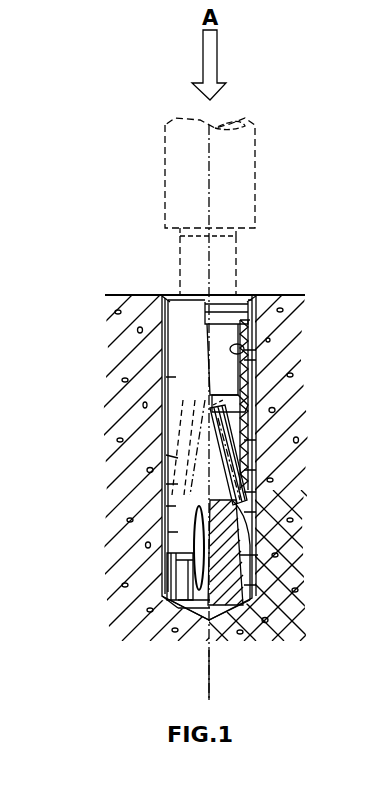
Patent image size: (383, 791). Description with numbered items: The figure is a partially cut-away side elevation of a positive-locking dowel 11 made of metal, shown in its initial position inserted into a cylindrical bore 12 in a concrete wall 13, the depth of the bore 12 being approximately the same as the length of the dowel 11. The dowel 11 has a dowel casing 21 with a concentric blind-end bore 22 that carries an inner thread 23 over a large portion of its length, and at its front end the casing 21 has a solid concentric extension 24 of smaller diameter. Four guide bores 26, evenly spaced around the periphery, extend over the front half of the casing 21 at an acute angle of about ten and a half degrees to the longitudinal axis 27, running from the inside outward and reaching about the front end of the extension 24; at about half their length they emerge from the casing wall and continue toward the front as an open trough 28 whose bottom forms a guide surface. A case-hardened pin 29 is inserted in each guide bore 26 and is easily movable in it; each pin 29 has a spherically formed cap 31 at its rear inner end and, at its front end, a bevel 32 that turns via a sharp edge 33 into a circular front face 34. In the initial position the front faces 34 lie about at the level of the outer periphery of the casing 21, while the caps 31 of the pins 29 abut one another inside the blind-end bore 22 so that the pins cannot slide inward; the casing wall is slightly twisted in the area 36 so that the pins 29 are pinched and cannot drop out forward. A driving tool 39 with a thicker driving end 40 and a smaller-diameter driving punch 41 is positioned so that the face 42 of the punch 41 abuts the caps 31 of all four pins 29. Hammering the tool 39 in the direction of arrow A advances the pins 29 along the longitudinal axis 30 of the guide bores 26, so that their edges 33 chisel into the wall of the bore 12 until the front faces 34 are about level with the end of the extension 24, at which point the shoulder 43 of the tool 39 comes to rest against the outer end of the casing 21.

The positive-locking dowel 11 is at (272, 438).
The cylindrical bore 12 is at (163, 416).
The concrete wall 13 is at (168, 560).
The dowel casing 21 is at (258, 352).
The blind-end bore 22 is at (258, 328).
The inner thread 23 is at (270, 296).
The extension 24 is at (166, 590).
The guide bores 26 is at (160, 483).
The longitudinal axis 27 is at (212, 664).
The open trough 28 is at (250, 610).
The pins 29 is at (160, 456).
The longitudinal axis of the guide bores 30 is at (210, 392).
The spherically formed cap 31 is at (262, 379).
The bevel 32 is at (238, 530).
The sharp edge 33 is at (246, 560).
The circular front face 34 is at (160, 530).
The twisted area 36 is at (166, 506).
The driving tool 39 is at (166, 172).
The driving end 40 is at (193, 183).
The driving punch 41 is at (197, 268).
The face of the punch 42 is at (205, 392).
The shoulder 43 is at (178, 232).